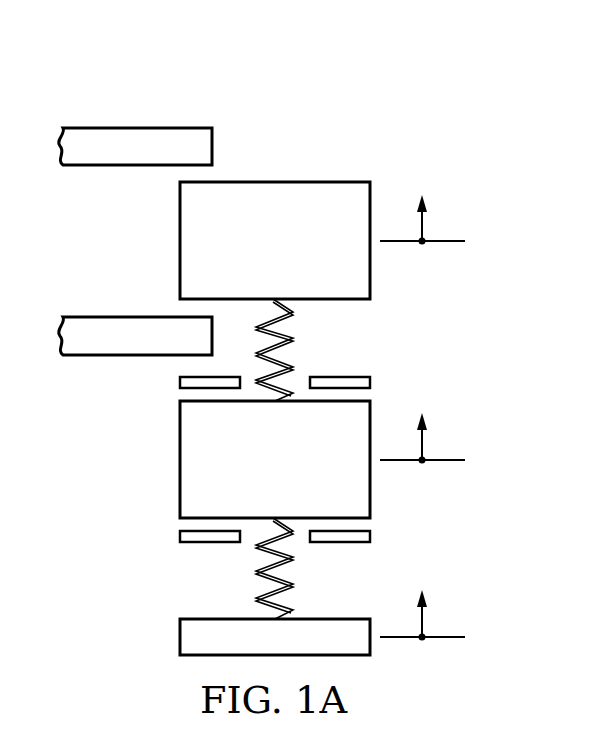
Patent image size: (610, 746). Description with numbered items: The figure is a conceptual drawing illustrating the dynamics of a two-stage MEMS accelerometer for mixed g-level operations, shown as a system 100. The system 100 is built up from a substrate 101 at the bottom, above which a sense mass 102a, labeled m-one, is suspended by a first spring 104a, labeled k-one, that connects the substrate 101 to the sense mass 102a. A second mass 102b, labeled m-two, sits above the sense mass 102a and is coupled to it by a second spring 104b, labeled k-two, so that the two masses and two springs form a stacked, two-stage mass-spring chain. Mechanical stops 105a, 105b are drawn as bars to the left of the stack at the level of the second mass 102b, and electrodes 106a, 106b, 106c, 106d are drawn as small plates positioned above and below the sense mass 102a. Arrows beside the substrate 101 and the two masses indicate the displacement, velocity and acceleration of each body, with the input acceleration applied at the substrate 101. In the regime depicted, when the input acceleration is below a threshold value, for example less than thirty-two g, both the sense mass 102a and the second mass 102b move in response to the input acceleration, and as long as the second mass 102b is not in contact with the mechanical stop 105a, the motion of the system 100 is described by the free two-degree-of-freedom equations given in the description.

The system 100 is at (346, 70).
The substrate 101 is at (180, 636).
The sense mass 102a is at (180, 458).
The mass 102b is at (180, 240).
The spring 104a is at (297, 585).
The spring 104b is at (298, 339).
The mechanical stop 105a is at (131, 317).
The mechanical stop 105b is at (131, 128).
The electrode 106a is at (180, 382).
The electrode 106b is at (370, 383).
The electrode 106c is at (370, 537).
The electrode 106d is at (180, 536).